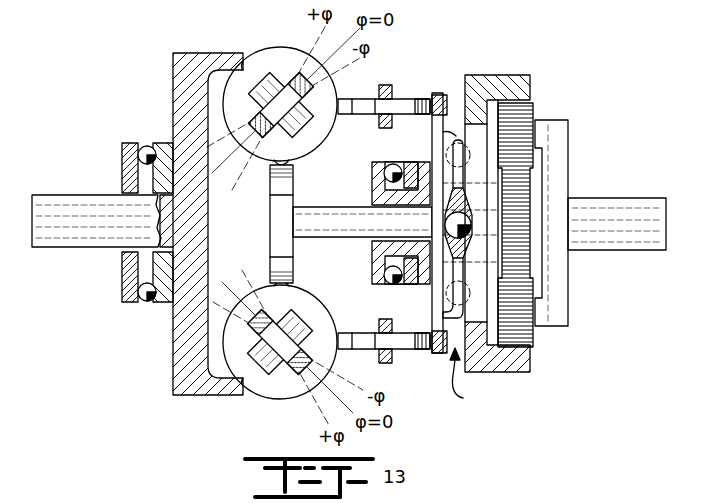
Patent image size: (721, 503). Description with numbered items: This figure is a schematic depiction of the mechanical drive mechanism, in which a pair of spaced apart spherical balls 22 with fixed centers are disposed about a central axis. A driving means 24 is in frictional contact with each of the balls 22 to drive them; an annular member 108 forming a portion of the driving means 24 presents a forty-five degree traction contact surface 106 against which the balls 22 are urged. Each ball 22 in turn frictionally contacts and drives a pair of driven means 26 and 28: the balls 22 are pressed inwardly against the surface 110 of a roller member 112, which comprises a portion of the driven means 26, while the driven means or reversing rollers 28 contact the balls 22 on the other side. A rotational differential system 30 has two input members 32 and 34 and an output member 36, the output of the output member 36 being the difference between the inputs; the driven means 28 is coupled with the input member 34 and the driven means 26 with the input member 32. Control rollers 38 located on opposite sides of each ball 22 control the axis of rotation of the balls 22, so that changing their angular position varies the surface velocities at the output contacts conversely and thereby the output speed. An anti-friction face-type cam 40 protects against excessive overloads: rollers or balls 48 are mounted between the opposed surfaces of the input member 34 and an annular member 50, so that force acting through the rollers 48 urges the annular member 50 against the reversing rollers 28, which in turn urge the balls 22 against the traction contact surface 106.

The spherical balls 22 is at (331, 132).
The driving means 24 is at (94, 196).
The driven means 26 is at (296, 208).
The driven means (reversing rollers) 28 is at (367, 98).
The rotational differential system 30 is at (541, 111).
The input member 32 is at (534, 258).
The input member (outer ring gear) 34 is at (487, 76).
The output member 36 is at (569, 142).
The control rollers 38 is at (270, 72).
The anti-friction face-type cam 40 is at (469, 377).
The rollers or balls 48 is at (446, 134).
The annular member 50 is at (437, 93).
The traction contact surface 106 is at (247, 66).
The annular member 108 is at (196, 53).
The surface 110 is at (295, 163).
The roller member 112 is at (270, 213).